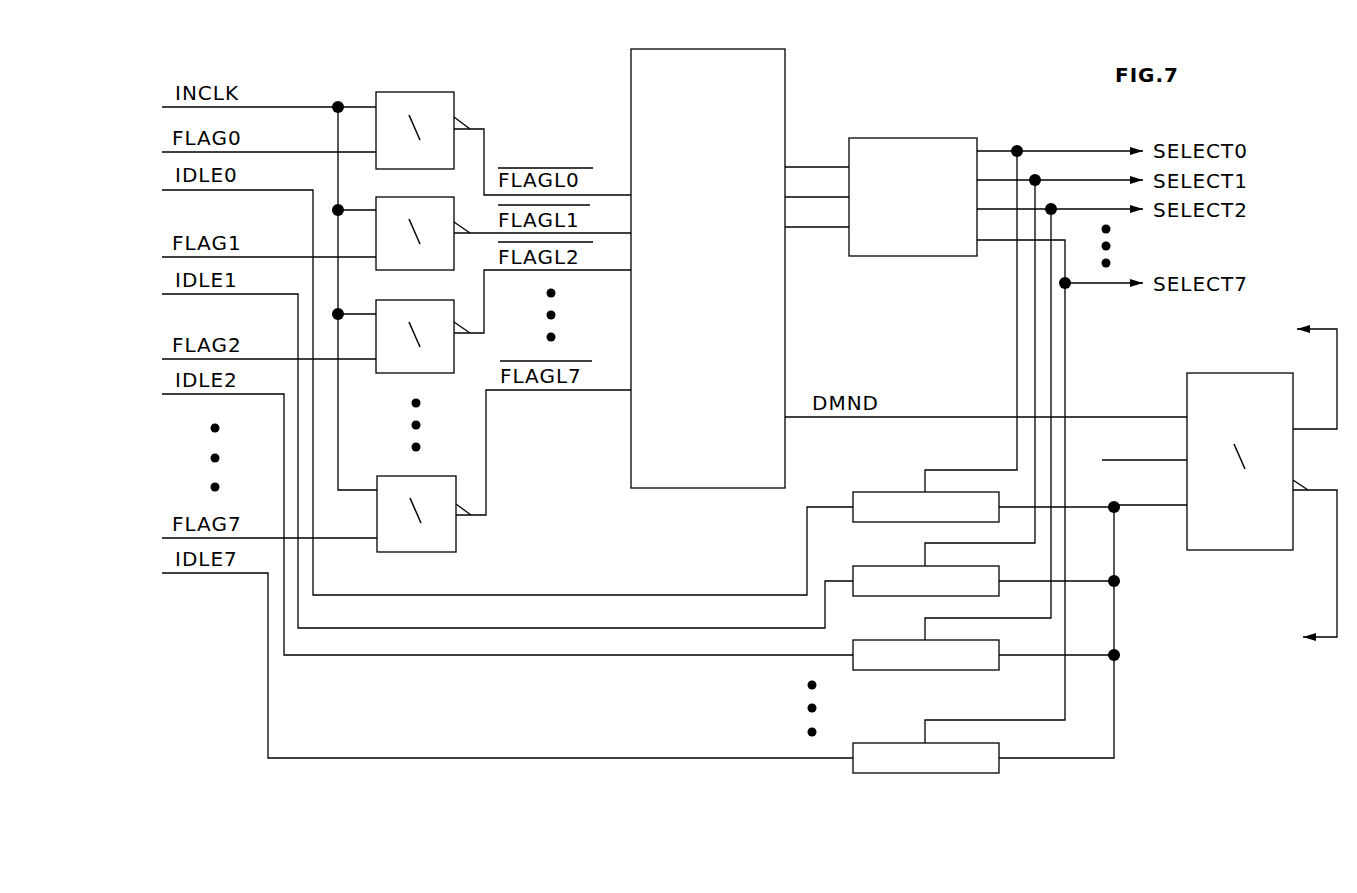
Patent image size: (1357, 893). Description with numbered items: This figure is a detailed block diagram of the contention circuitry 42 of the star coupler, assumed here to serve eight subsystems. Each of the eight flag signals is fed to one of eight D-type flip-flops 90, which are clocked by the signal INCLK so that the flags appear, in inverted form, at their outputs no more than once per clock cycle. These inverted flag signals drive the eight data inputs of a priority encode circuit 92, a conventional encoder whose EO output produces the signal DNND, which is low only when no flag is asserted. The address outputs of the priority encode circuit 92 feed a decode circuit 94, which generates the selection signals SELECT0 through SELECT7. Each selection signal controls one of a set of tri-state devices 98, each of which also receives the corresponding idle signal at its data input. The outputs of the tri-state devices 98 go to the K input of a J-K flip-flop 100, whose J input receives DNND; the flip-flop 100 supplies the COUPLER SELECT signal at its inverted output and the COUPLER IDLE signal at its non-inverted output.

The contention circuitry 42 is at (855, 137).
The D-type flip-flops 90 is at (499, 321).
The priority encode circuit 92 is at (670, 268).
The decode circuit 94 is at (913, 178).
The tri-state devices 98 is at (998, 613).
The J-K flip-flop 100 is at (1219, 492).